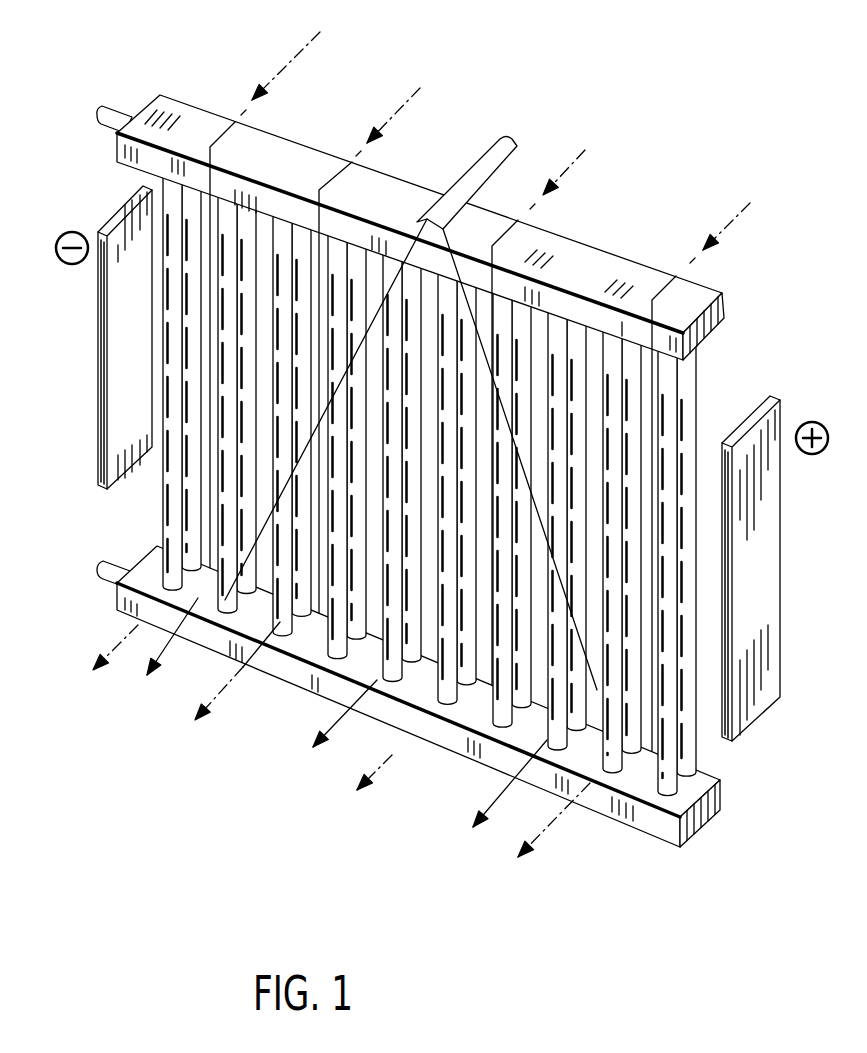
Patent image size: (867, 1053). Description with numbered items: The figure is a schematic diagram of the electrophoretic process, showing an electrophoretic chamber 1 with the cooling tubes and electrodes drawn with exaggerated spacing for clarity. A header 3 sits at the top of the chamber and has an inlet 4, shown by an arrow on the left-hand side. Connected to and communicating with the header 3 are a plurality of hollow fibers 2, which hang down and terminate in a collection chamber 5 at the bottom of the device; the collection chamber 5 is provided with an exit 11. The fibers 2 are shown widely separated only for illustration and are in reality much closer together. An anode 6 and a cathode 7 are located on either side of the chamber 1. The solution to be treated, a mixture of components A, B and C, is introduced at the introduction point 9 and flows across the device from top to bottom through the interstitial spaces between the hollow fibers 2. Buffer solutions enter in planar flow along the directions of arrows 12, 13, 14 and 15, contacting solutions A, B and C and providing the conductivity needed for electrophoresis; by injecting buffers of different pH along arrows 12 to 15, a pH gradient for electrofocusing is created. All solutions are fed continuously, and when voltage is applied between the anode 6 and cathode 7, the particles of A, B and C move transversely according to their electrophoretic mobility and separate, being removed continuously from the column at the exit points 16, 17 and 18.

The electrophoretic chamber 1 is at (393, 469).
The hollow fibers 2 is at (185, 525).
The header 3 is at (720, 300).
The inlet 4 is at (84, 108).
The collection chamber 5 is at (722, 798).
The anode 6 is at (770, 545).
The cathode 7 is at (98, 332).
The introduction point 9 is at (540, 100).
The exit 11 is at (100, 578).
The buffer solution flow arrow 12 is at (287, 56).
The buffer solution flow arrow 13 is at (396, 112).
The buffer solution flow arrow 14 is at (567, 172).
The buffer solution flow arrow 15 is at (730, 222).
The exit point 16 is at (172, 657).
The exit point 17 is at (326, 742).
The exit point 18 is at (485, 795).